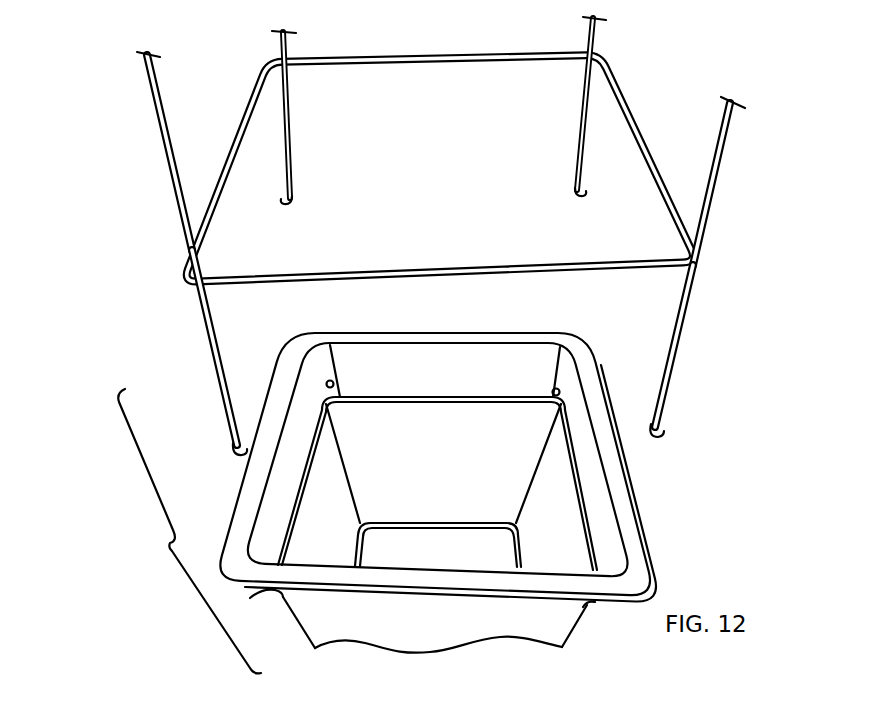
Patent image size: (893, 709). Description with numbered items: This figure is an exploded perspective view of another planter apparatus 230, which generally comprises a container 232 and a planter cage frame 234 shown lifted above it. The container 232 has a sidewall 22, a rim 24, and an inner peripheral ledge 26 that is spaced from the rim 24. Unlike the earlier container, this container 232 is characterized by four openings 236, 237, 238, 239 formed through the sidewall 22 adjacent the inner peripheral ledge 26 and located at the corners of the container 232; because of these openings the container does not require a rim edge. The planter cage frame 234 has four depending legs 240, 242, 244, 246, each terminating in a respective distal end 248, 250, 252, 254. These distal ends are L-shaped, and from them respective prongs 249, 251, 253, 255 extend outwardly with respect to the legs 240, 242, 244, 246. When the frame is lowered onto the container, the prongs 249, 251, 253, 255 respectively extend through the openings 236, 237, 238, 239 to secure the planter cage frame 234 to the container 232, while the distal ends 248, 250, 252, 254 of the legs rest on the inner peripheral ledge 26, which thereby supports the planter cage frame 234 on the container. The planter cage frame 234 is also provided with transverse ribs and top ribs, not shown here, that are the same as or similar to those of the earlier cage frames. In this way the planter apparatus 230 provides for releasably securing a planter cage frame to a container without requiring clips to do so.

The sidewall 22 is at (506, 647).
The rim 24 is at (248, 497).
The inner peripheral ledge 26 is at (302, 492).
The planter apparatus 230 is at (189, 531).
The container 232 is at (364, 655).
The planter cage frame 234 is at (664, 66).
The opening 236 is at (590, 606).
The opening 237 is at (551, 391).
The opening 238 is at (335, 385).
The opening 239 is at (278, 596).
The leg 240 is at (727, 155).
The leg 242 is at (589, 30).
The leg 244 is at (283, 44).
The leg 246 is at (160, 133).
The distal end 248 is at (683, 345).
The prong 249 is at (662, 428).
The distal end 250 is at (582, 102).
The prong 251 is at (584, 196).
The distal end 252 is at (292, 156).
The prong 253 is at (284, 203).
The distal end 254 is at (214, 362).
The prong 255 is at (236, 450).